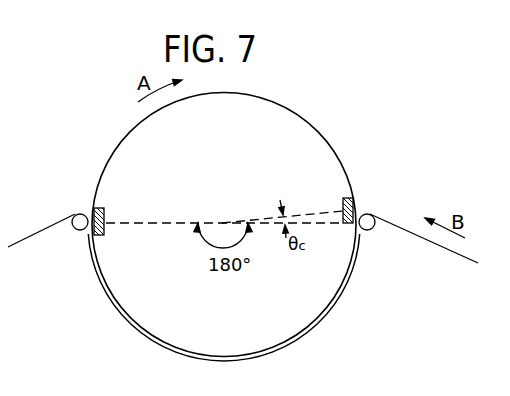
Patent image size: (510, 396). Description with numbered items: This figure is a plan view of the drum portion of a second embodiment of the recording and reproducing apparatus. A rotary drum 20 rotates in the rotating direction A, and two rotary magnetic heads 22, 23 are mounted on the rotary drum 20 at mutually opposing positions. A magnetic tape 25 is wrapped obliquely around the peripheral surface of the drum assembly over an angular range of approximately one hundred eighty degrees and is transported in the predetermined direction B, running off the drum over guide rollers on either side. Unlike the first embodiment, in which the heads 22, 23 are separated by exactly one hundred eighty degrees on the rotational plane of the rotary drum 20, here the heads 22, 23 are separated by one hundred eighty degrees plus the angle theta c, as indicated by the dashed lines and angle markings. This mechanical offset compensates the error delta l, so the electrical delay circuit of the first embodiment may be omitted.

The rotary drum 20 is at (334, 158).
The rotary magnetic head 22 is at (105, 212).
The rotary magnetic head 23 is at (346, 198).
The magnetic tape 25 is at (428, 240).